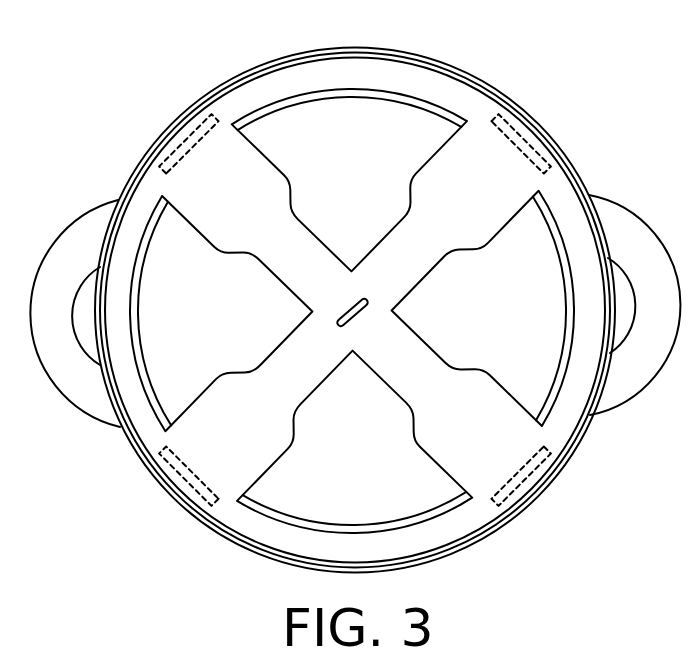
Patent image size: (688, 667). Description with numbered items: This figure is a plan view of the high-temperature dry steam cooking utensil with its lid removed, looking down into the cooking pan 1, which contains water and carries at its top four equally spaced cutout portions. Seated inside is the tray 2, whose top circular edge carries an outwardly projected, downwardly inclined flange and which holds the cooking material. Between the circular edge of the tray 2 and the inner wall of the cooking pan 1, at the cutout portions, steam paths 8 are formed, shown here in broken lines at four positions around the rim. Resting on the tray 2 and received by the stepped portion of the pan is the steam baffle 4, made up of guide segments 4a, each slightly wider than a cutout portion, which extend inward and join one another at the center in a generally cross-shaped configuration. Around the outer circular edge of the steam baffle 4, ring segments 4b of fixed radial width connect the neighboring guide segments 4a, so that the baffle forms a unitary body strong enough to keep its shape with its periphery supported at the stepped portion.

The cooking pan 1 is at (584, 146).
The tray 2 is at (165, 238).
The steam baffle 4 is at (268, 128).
The guide segment 4a is at (270, 184).
The ring segment 4b is at (580, 387).
The steam path 8 is at (176, 128).